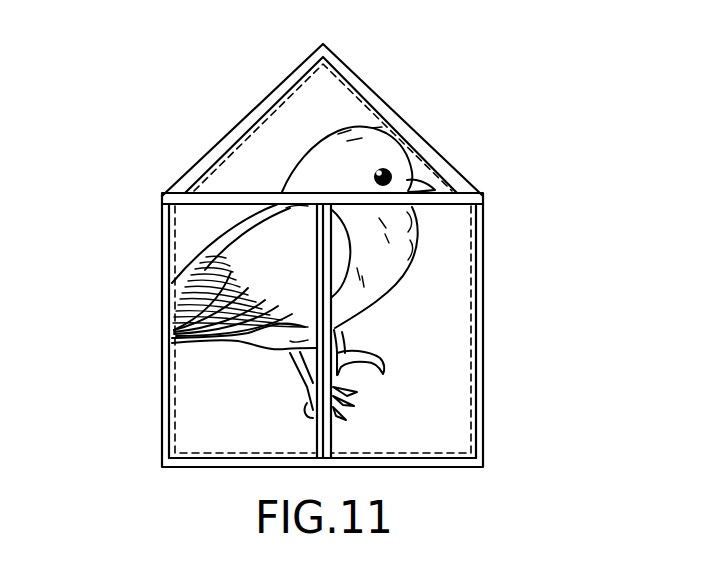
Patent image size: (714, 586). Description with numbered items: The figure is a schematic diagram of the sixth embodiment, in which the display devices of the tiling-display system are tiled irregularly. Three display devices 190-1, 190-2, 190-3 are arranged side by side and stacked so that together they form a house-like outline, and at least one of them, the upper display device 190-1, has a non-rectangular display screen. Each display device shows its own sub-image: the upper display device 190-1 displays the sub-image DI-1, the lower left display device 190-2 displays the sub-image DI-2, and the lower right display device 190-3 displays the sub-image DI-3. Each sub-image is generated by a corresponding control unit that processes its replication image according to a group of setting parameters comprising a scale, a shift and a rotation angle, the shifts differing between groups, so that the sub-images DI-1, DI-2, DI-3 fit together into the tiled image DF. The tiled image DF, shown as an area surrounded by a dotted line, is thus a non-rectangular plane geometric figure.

The display device 190-1 is at (420, 147).
The display device 190-2 is at (165, 268).
The display device 190-3 is at (478, 263).
The sub-image DI-1 is at (361, 105).
The sub-image DI-2 is at (203, 362).
The sub-image DI-3 is at (444, 314).
The tiled image DF is at (483, 373).